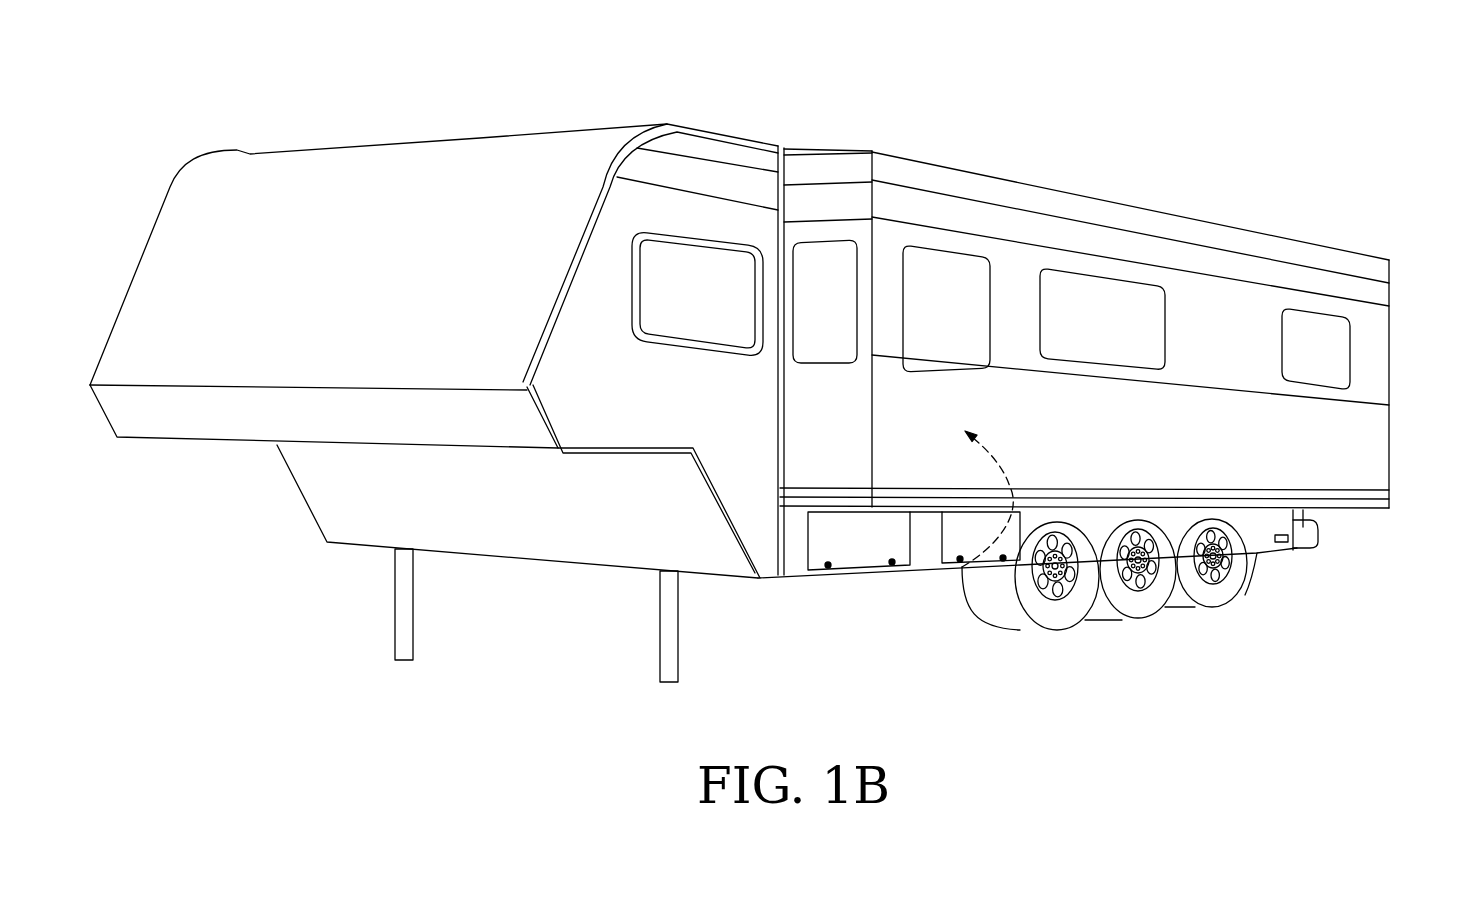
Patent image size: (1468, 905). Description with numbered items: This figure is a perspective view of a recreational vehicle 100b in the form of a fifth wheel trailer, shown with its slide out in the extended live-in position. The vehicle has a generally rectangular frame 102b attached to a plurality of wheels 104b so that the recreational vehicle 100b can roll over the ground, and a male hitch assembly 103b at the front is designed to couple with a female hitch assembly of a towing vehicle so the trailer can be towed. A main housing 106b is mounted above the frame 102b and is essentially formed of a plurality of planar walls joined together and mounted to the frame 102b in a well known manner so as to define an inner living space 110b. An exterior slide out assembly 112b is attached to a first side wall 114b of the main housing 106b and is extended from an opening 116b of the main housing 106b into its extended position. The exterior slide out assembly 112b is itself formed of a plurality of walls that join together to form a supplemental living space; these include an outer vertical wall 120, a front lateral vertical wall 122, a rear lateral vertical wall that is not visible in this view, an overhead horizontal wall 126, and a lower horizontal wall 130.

The recreational vehicle 100b is at (872, 70).
The main housing 106b is at (491, 147).
The front lateral vertical wall 122 is at (800, 200).
The exterior slide out assembly 112b is at (958, 218).
The overhead horizontal wall 126 is at (1228, 225).
The outer vertical wall 120 is at (1368, 457).
The lower horizontal wall 130 is at (1363, 510).
The male hitch assembly 103b is at (345, 448).
The opening 116b is at (778, 413).
The frame 102b is at (868, 575).
The first side wall 114b is at (923, 553).
The inner living space 110b is at (952, 572).
The wheels 104b is at (1185, 608).